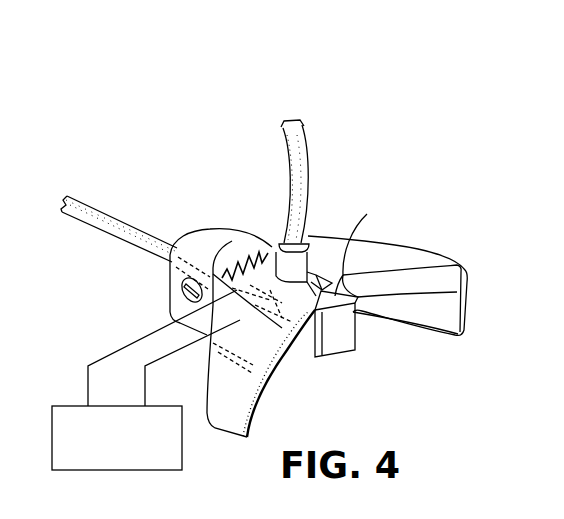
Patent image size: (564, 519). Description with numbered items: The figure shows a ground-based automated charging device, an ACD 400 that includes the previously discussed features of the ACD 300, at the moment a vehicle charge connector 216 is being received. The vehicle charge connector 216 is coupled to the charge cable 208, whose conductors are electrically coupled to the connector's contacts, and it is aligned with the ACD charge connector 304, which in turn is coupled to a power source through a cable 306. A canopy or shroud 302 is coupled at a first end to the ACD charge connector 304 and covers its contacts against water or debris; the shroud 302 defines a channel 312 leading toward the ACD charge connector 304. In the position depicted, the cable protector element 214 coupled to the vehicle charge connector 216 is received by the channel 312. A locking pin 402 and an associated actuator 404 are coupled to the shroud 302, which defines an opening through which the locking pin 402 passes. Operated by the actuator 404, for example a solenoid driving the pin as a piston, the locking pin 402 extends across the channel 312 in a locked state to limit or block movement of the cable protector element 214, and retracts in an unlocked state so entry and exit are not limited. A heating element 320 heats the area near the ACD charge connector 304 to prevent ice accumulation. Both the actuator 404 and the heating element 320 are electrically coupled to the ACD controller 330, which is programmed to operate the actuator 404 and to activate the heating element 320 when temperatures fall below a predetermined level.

The Automated Charging Device (ACD) 300 is at (14, 39).
The shroud 302 is at (442, 248).
The channel 312 is at (360, 238).
The charge cable 208 is at (281, 141).
The cable protector element 214 is at (263, 247).
The locking pin 402 is at (319, 258).
The ACD 400 is at (365, 127).
The cable 306 is at (148, 226).
The ACD charge connector 304 is at (228, 234).
The heating element 320 is at (203, 231).
The vehicle charge connector 216 is at (338, 333).
The actuator 404 is at (290, 364).
The ACD controller 330 is at (75, 405).